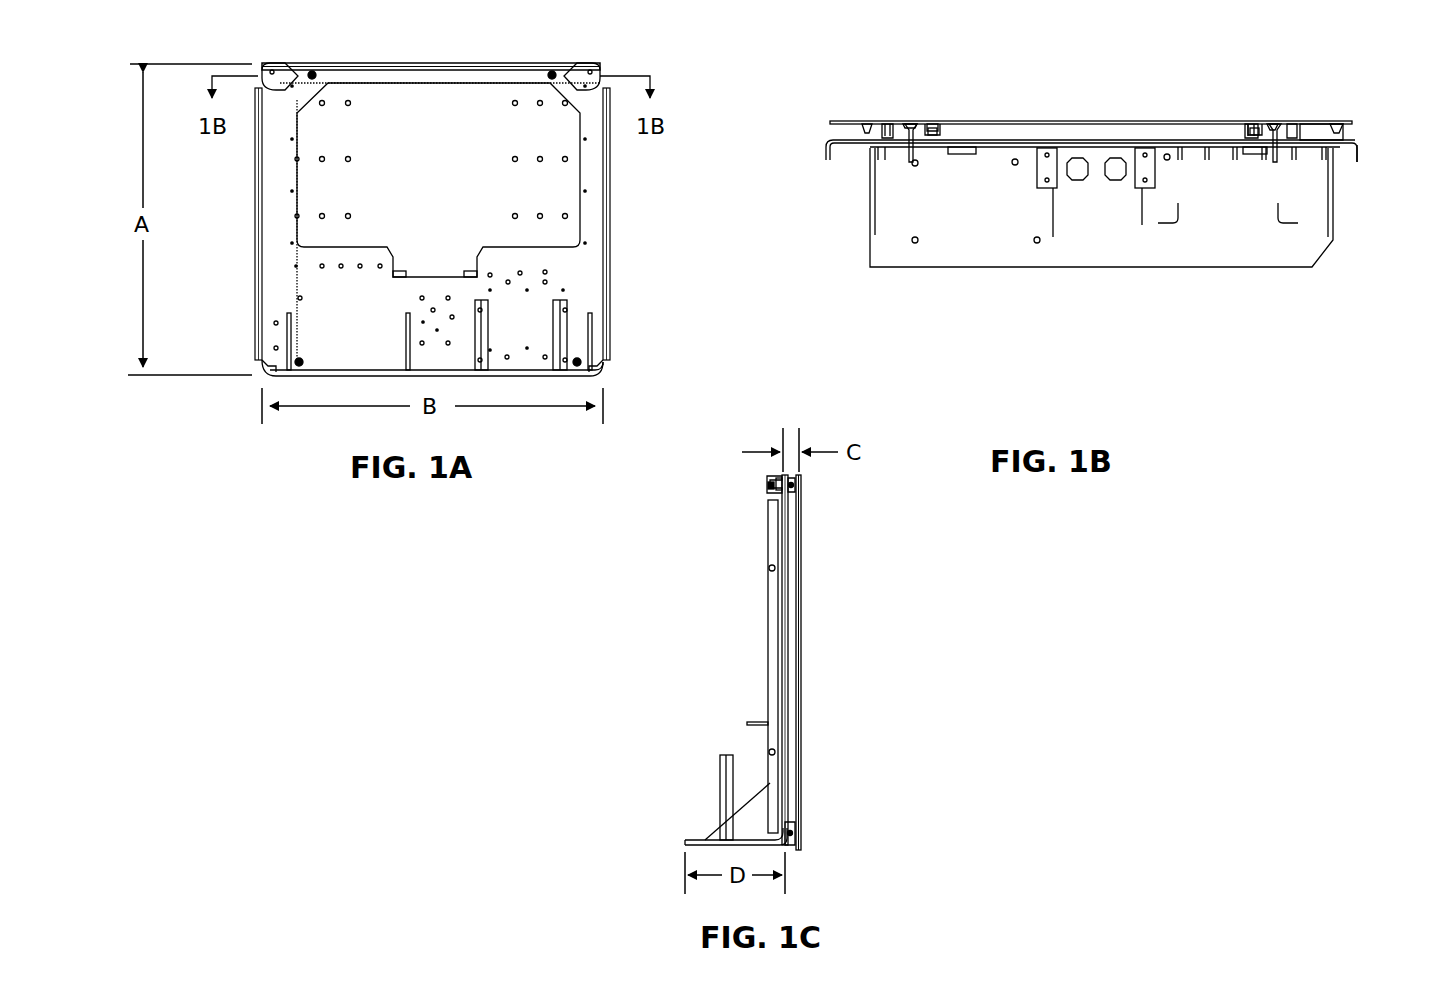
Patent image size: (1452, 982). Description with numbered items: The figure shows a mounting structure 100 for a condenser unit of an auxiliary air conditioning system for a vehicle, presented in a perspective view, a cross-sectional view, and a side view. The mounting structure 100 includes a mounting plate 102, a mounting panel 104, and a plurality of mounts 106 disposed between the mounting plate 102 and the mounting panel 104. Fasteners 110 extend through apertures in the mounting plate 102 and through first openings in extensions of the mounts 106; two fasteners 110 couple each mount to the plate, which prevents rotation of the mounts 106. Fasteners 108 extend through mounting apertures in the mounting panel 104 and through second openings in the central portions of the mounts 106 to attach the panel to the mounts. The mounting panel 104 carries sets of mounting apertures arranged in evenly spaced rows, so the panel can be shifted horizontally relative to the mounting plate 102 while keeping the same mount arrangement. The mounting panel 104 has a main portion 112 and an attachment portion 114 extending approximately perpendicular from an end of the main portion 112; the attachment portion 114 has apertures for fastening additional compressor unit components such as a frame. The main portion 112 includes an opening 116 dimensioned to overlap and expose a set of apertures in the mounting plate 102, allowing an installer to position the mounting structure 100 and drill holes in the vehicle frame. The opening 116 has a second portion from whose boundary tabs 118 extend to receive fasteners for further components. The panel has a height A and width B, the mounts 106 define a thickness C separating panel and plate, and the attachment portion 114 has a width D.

In FIG. 1A, the mounting structure 100 is at (672, 132).
In FIG. 1B, the mounting structure 100 is at (1390, 143).
In FIG. 1C, the mounting structure 100 is at (896, 628).
In FIG. 1A, the mounting plate 102 is at (565, 143).
In FIG. 1B, the mounting plate 102 is at (1110, 133).
In FIG. 1C, the mounting plate 102 is at (802, 572).
In FIG. 1A, the mounting panel 104 is at (594, 227).
In FIG. 1B, the mounting panel 104 is at (826, 152).
In FIG. 1C, the mounting panel 104 is at (776, 660).
In FIG. 1B, the mounts 106 is at (940, 130).
In FIG. 1C, the mounts 106 is at (786, 472).
In FIG. 1A, the fasteners 108 is at (312, 72).
In FIG. 1B, the fasteners 108 is at (911, 162).
In FIG. 1B, the fasteners 110 is at (878, 124).
In FIG. 1A, the main portion 112 is at (598, 290).
In FIG. 1B, the main portion 112 is at (1357, 162).
In FIG. 1C, the main portion 112 is at (780, 555).
In FIG. 1B, the attachment portion 114 is at (1148, 243).
In FIG. 1C, the attachment portion 114 is at (700, 843).
In FIG. 1A, the opening 116 is at (320, 180).
In FIG. 1B, the tabs 118 is at (1142, 188).